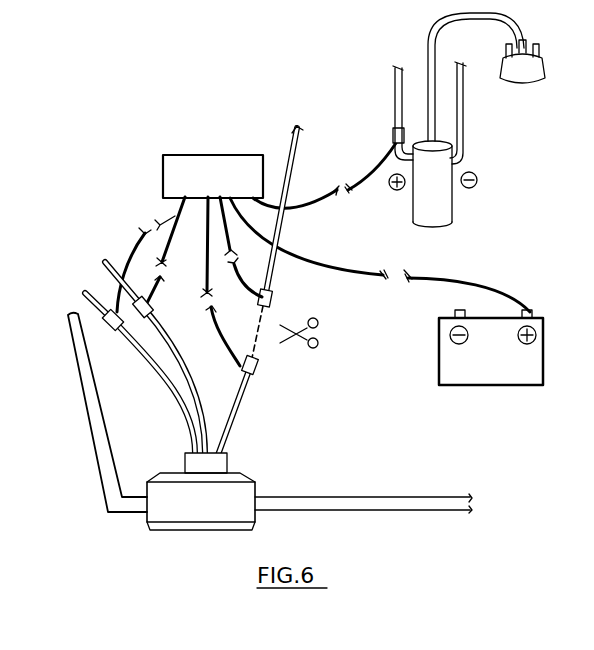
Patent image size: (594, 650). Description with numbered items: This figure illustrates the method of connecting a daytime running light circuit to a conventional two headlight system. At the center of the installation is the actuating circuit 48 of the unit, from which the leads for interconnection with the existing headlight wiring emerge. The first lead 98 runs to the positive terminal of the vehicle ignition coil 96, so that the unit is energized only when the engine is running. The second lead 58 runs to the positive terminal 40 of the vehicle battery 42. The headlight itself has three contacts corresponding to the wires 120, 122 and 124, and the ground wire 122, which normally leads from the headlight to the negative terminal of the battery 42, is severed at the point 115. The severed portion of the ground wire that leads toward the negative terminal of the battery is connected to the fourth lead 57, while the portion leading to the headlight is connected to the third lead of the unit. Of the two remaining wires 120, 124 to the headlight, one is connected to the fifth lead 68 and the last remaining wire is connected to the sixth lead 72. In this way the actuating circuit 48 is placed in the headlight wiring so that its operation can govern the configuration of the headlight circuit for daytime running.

The actuating circuit 48 is at (184, 155).
The fifth lead 68 is at (171, 219).
The sixth lead 72 is at (140, 240).
The first lead 98 is at (319, 192).
The ignition coil 96 is at (452, 208).
The fourth lead 57 is at (235, 270).
The second lead 58 is at (447, 275).
The positive terminal 40 is at (533, 311).
The vehicle battery 42 is at (445, 381).
The severance point 115 is at (267, 320).
The headlight lead 120 is at (192, 357).
The headlight lead 124 is at (166, 388).
The ground wire 122 is at (230, 440).